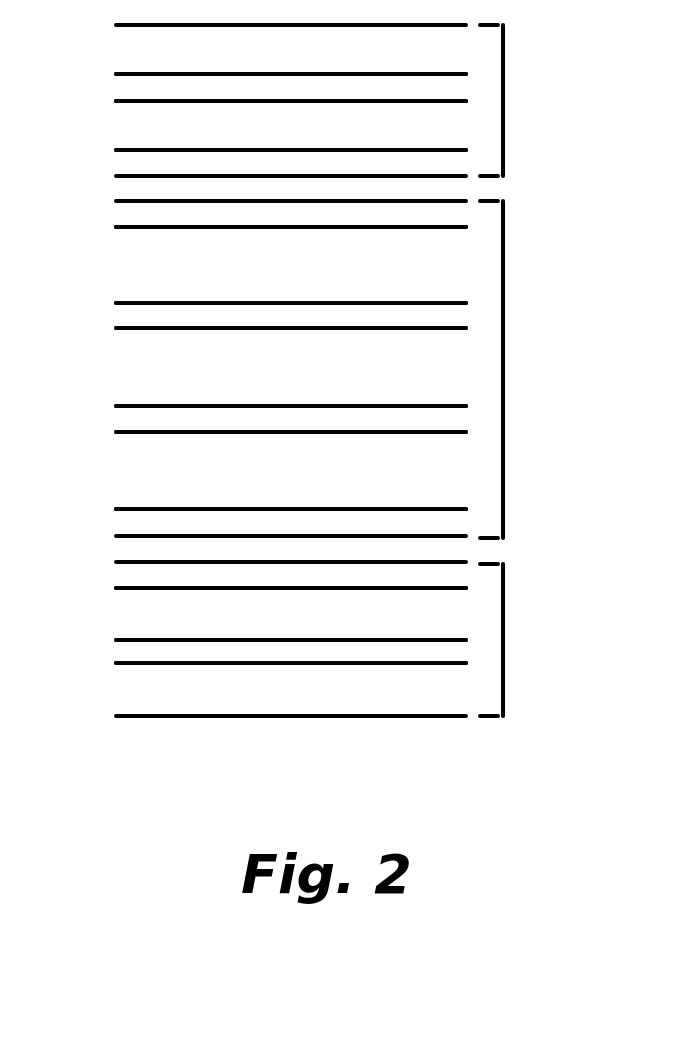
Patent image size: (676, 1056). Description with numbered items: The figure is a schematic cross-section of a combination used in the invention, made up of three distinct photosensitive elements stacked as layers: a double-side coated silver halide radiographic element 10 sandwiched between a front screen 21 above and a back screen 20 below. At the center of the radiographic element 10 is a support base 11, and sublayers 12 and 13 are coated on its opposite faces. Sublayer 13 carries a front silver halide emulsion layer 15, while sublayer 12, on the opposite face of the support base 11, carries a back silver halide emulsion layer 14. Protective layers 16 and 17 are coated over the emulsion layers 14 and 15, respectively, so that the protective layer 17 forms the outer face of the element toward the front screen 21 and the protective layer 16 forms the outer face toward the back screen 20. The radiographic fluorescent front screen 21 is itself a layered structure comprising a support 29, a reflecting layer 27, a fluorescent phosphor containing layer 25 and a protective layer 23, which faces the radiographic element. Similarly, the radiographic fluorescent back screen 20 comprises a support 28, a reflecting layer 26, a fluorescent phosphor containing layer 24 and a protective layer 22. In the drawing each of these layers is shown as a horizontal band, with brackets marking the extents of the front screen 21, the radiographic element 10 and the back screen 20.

The double-side coated silver halide radiographic element 10 is at (505, 365).
The support base 11 is at (266, 367).
The sublayer 12 is at (264, 420).
The sublayer 13 is at (264, 315).
The back silver halide emulsion layer 14 is at (265, 470).
The front silver halide emulsion layer 15 is at (264, 265).
The protective layer 16 is at (264, 525).
The protective layer 17 is at (264, 210).
The back screen 20 is at (505, 637).
The front screen 21 is at (505, 98).
The protective layer 22 is at (263, 575).
The protective layer 23 is at (264, 165).
The fluorescent phosphor containing layer 24 is at (264, 614).
The fluorescent phosphor containing layer 25 is at (264, 125).
The reflecting layer 26 is at (263, 652).
The reflecting layer 27 is at (264, 84).
The support 28 is at (264, 689).
The support 29 is at (264, 49).